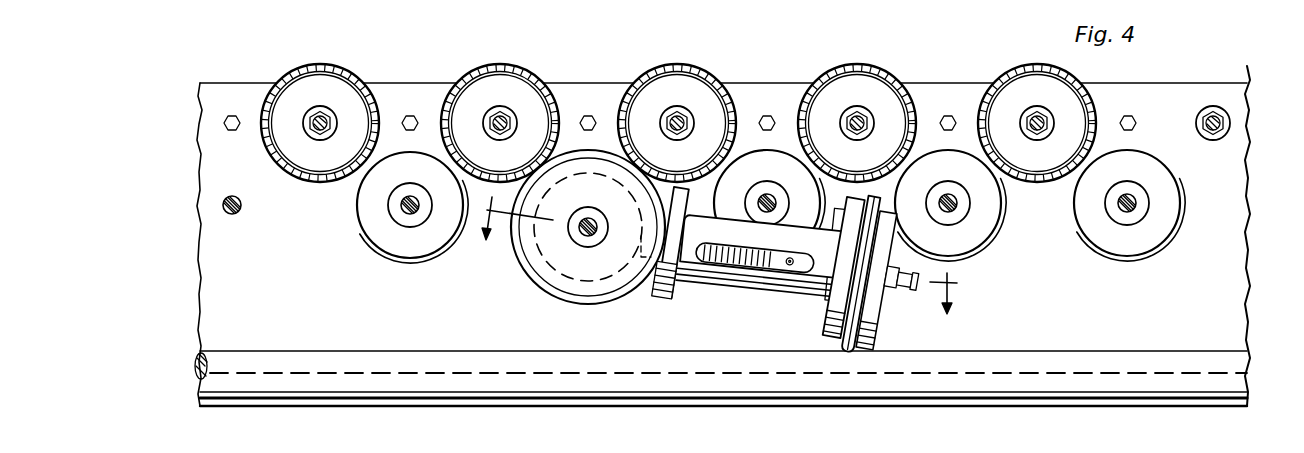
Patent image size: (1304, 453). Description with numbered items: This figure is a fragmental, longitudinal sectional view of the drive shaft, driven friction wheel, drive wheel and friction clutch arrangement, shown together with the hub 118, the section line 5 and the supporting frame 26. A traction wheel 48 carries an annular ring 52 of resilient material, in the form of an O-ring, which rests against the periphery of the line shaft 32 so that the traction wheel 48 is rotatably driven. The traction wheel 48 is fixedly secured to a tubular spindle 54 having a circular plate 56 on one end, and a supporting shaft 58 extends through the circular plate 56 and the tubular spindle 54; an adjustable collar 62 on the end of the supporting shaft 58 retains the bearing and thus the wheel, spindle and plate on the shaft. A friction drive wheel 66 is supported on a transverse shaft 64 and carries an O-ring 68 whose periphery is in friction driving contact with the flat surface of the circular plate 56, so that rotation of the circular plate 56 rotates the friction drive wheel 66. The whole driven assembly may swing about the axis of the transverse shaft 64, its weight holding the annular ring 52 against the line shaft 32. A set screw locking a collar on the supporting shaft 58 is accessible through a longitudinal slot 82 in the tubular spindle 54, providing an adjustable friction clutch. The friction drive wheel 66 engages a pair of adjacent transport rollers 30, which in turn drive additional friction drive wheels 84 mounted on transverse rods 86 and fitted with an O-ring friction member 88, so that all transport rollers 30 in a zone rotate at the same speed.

The section line 5- 5 is at (716, 266).
The carriage frame plate 26 is at (1068, 322).
The transport rollers 30 is at (703, 80).
The line shaft 32 is at (1134, 352).
The traction wheel 48 is at (825, 318).
The annular ring 52 is at (847, 342).
The tubular spindle 54 is at (748, 285).
The circular plate 56 is at (669, 281).
The supporting shaft 58 is at (908, 295).
The adjustable collar 62 is at (968, 251).
The transverse shaft 64 is at (578, 229).
The friction drive wheel 66 is at (570, 262).
The O-ring 68 is at (603, 296).
The longitudinal slot 82 is at (717, 252).
The friction drive wheels 84 is at (400, 240).
The transverse rods 86 is at (224, 209).
The O-ring friction member 88 is at (270, 249).
The wheel hub 118 is at (1234, 121).